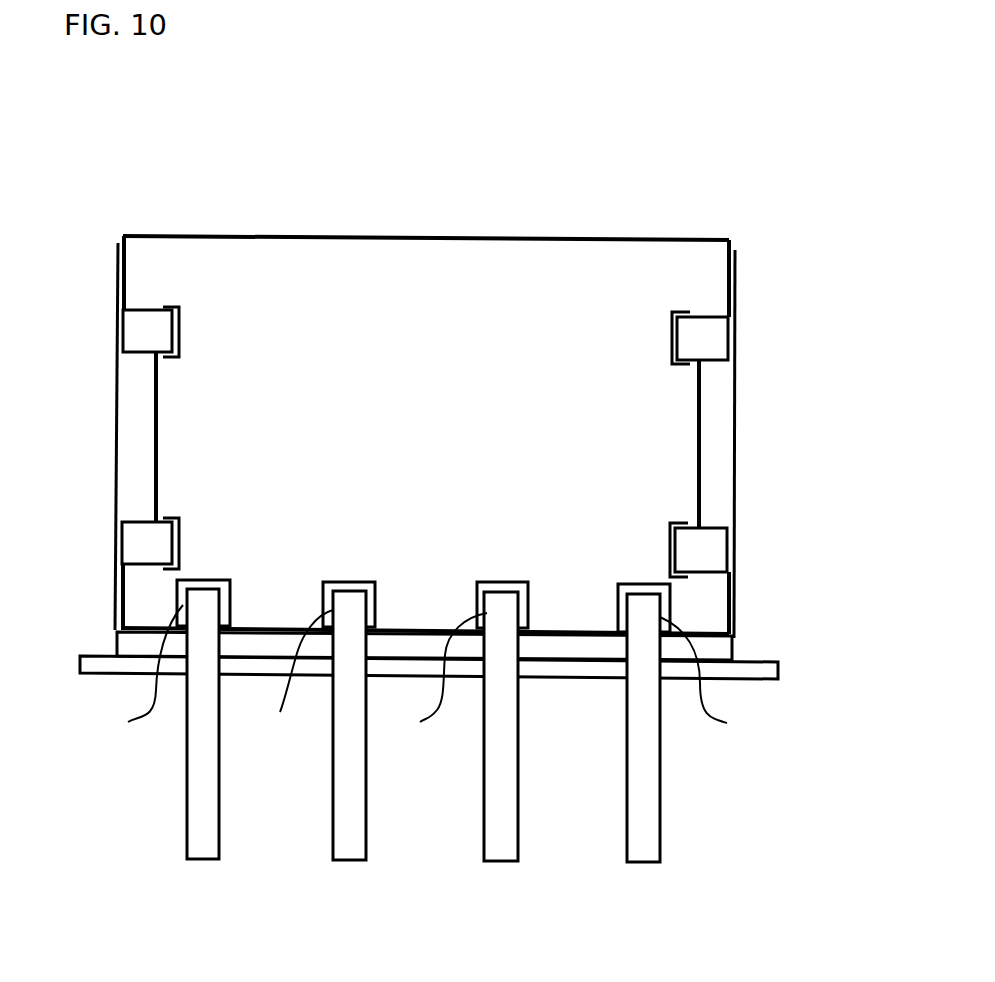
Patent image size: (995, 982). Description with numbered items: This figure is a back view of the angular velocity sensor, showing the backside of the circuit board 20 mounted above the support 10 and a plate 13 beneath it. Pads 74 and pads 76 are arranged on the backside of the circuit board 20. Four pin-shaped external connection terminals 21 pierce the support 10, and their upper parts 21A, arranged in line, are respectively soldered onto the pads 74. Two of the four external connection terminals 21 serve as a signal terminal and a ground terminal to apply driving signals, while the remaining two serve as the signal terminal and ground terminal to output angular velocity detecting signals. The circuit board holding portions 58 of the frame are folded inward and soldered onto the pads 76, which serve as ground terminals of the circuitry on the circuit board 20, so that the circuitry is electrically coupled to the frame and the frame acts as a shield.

The support 10 is at (750, 660).
The mounting plate 13 is at (778, 672).
The circuit board 20 is at (423, 238).
The external connection terminal 21 is at (660, 778).
The upper part 21A is at (444, 679).
The circuit board holding portion 58 is at (122, 325).
The pad 74 is at (197, 580).
The pad 76 is at (181, 327).